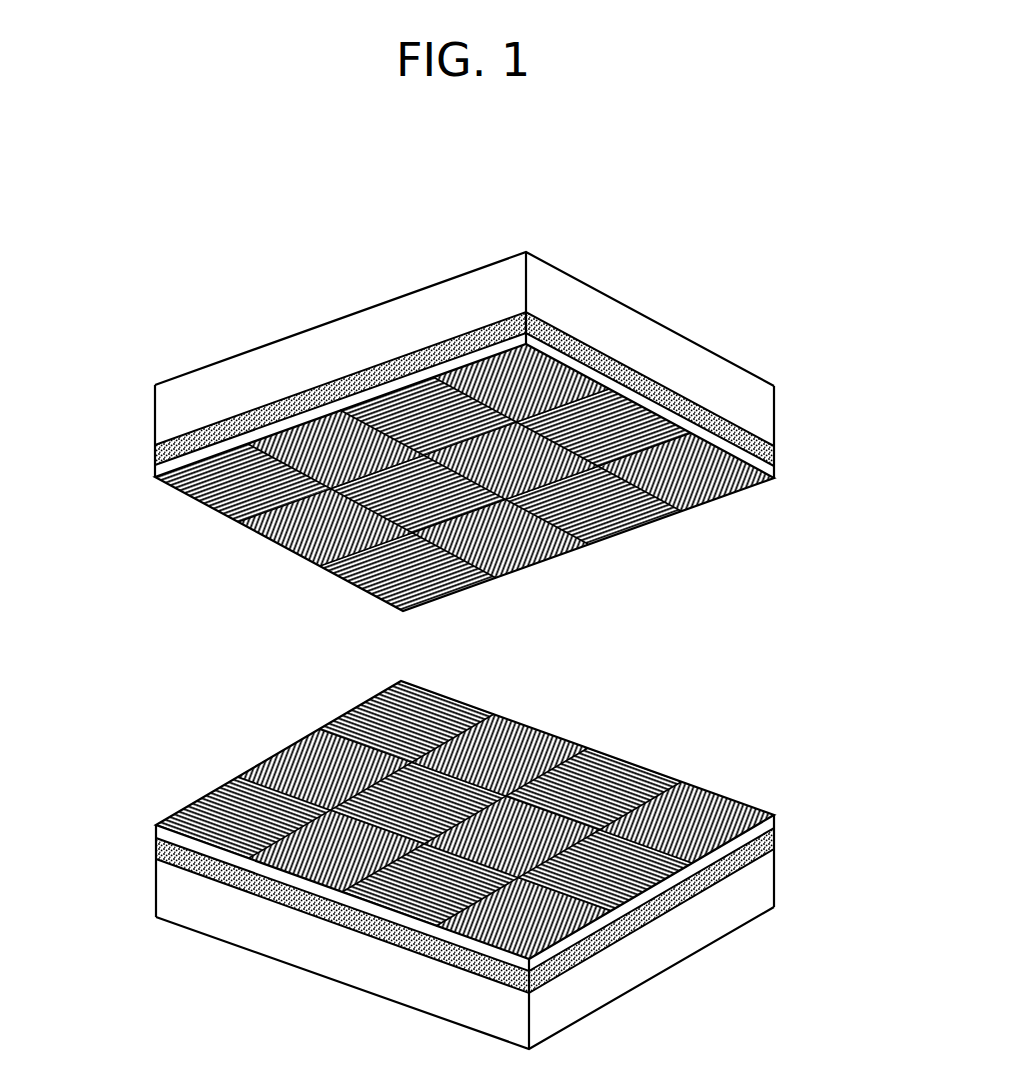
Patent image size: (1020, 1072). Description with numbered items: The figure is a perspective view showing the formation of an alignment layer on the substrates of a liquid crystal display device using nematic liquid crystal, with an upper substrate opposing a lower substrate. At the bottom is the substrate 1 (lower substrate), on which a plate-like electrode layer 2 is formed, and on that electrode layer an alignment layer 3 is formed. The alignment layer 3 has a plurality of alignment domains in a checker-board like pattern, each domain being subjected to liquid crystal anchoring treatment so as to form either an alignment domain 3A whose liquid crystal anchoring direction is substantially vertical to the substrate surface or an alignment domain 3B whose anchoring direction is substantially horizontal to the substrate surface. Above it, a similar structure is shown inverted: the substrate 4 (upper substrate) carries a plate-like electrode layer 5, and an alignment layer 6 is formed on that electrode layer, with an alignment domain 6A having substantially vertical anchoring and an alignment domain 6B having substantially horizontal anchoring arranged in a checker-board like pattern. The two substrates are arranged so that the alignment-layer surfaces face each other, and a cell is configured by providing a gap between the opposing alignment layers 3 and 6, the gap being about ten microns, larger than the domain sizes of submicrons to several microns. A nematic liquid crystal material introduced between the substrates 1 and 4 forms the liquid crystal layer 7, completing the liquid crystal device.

The substrate 1 is at (768, 875).
The plate-like electrode layer 2 is at (768, 830).
The alignment layer 3 is at (768, 814).
The alignment domain 3A is at (728, 792).
The alignment domain 3B is at (615, 757).
The substrate 4 is at (767, 407).
The plate-like electrode layer 5 is at (767, 448).
The alignment layer 6 is at (767, 465).
The alignment domain 6A is at (722, 490).
The alignment domain 6B is at (612, 523).
The liquid crystal layer 7 is at (252, 658).